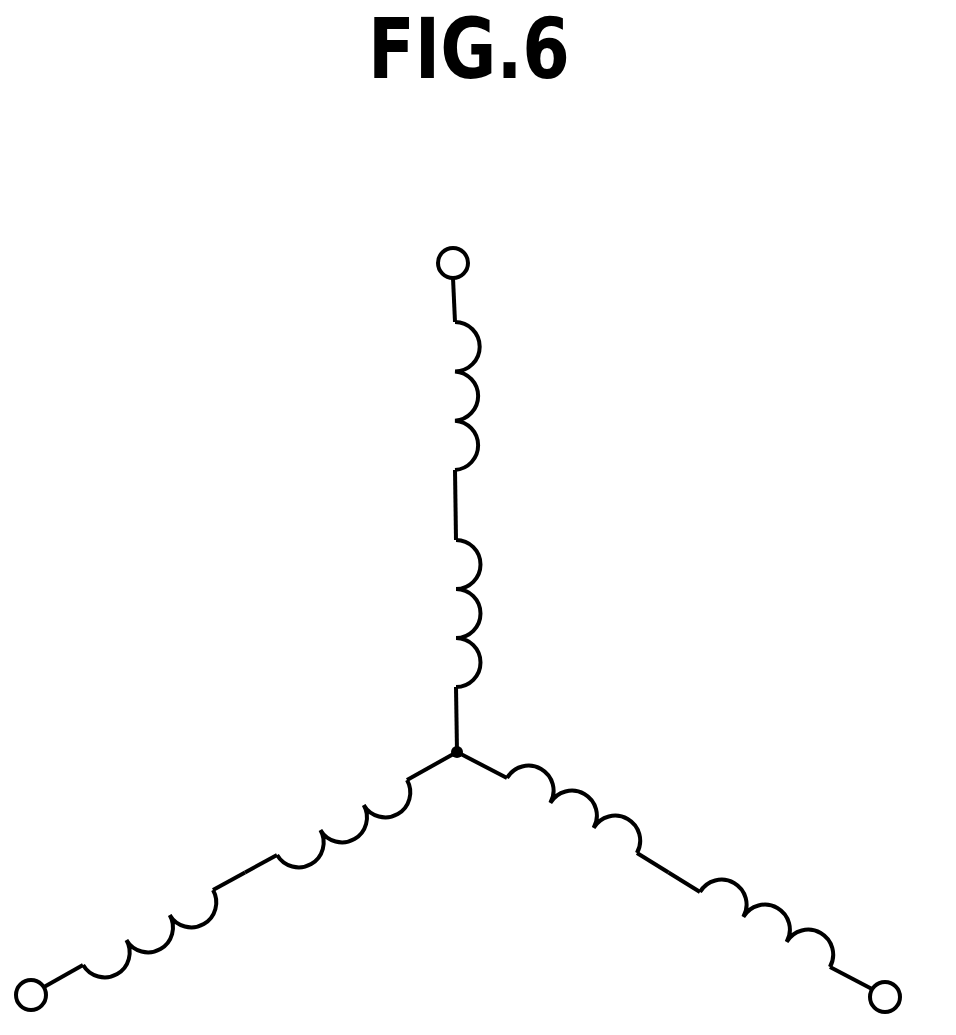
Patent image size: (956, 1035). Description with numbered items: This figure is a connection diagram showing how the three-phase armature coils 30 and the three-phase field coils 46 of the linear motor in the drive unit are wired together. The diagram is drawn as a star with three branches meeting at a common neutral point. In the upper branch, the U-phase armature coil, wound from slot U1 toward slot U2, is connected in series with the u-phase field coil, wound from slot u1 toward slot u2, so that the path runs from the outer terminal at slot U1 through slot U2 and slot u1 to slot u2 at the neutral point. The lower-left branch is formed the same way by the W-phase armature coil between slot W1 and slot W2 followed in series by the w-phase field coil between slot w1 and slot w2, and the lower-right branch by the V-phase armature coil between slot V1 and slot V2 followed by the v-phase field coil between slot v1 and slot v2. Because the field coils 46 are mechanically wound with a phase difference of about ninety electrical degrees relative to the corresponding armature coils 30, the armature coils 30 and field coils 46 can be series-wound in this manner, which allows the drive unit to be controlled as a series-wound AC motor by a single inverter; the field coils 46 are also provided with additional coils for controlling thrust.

The armature coils 30 is at (480, 387).
The field coils 46 is at (482, 612).
The slot U1 is at (488, 298).
The slot U2 is at (510, 479).
The slot u1 is at (496, 539).
The slot u2 is at (505, 701).
The slot W1 is at (54, 954).
The slot W2 is at (186, 864).
The slot w1 is at (258, 832).
The slot w2 is at (396, 754).
The slot V1 is at (841, 1001).
The slot V2 is at (695, 921).
The slot v1 is at (630, 879).
The slot v2 is at (489, 802).